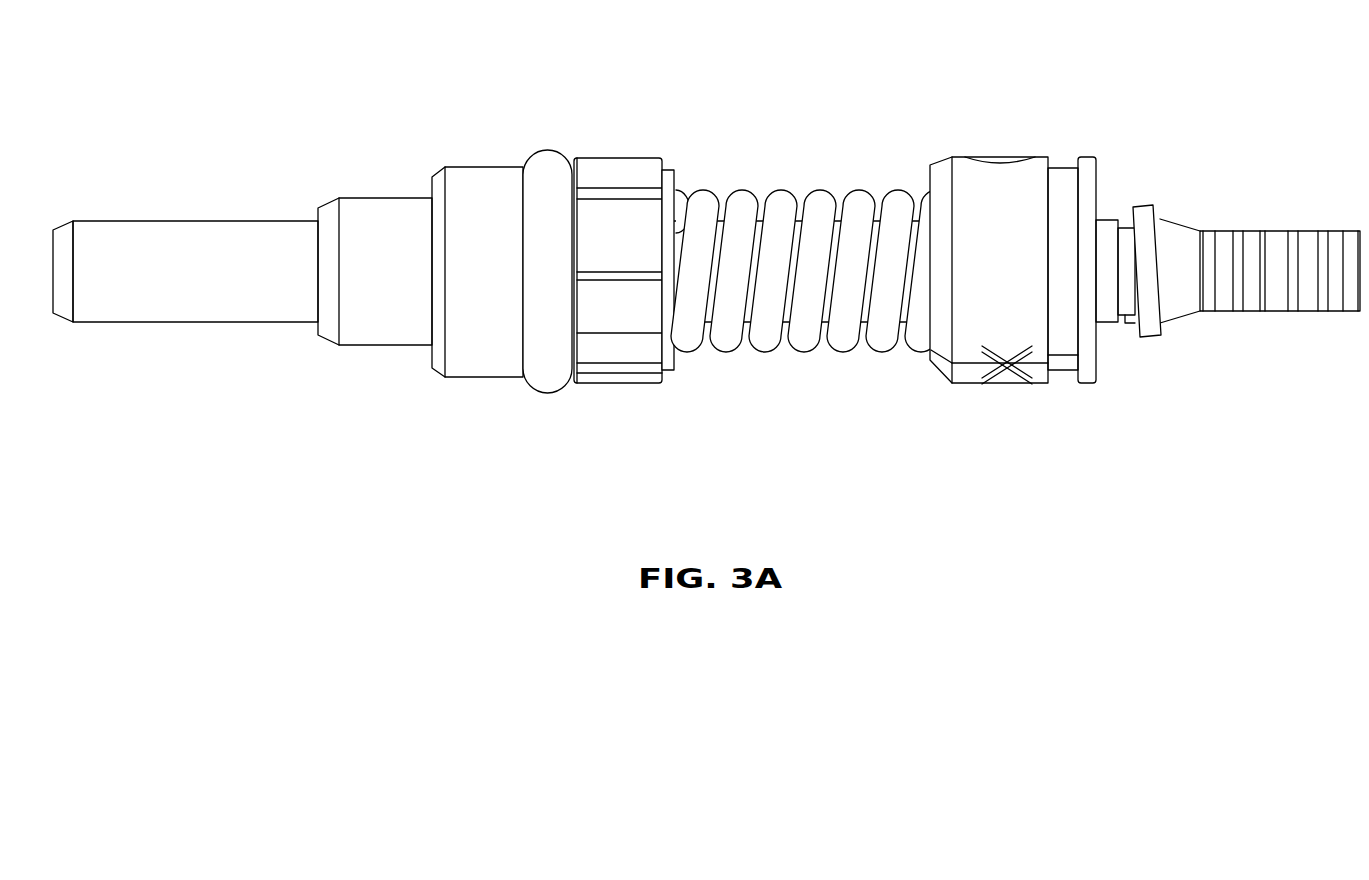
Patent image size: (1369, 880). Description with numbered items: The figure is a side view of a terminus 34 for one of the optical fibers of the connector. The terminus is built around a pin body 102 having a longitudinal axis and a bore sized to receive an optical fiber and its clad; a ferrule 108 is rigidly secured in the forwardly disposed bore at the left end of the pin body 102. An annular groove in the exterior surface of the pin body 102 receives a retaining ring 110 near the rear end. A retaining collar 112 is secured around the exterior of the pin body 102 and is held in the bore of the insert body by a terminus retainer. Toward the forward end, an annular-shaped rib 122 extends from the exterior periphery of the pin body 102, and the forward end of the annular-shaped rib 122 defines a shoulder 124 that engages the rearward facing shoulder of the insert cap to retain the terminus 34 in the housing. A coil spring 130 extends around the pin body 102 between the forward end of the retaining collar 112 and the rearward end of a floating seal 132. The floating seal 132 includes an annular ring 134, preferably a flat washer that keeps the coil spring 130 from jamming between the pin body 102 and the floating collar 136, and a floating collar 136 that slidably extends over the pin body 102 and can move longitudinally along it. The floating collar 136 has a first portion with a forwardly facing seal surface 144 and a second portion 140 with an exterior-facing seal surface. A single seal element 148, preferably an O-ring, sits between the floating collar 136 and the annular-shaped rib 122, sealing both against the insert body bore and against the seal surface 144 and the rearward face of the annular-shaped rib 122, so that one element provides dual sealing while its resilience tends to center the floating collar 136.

The termini 34 is at (1037, 82).
The pin body 102 is at (358, 346).
The ferrule 108 is at (167, 323).
The retaining ring 110 is at (1156, 337).
The retaining collar 112 is at (978, 157).
The annular-shaped rib 122 is at (482, 180).
The shoulder 124 is at (432, 187).
The coil spring 130 is at (772, 190).
The floating seal 132 is at (606, 414).
The annular ring 134 is at (670, 170).
The floating collar 136 is at (615, 185).
The second portion 140 is at (646, 382).
The forwardly facing seal surface 144 is at (570, 143).
The seal element 148 is at (542, 150).